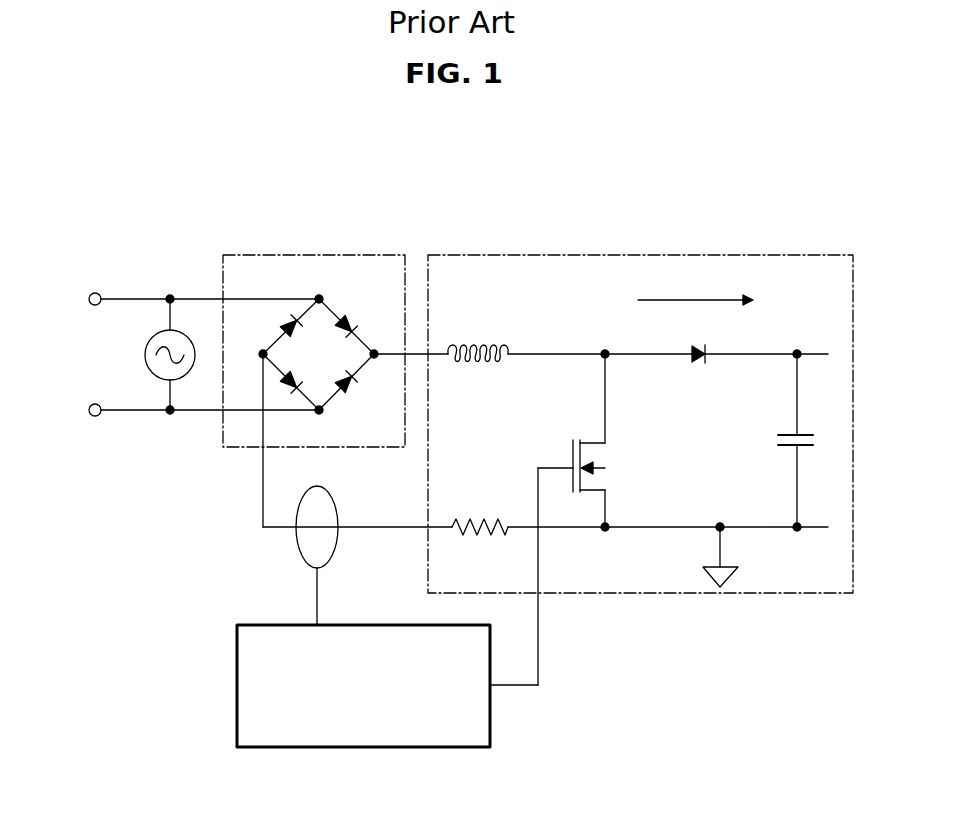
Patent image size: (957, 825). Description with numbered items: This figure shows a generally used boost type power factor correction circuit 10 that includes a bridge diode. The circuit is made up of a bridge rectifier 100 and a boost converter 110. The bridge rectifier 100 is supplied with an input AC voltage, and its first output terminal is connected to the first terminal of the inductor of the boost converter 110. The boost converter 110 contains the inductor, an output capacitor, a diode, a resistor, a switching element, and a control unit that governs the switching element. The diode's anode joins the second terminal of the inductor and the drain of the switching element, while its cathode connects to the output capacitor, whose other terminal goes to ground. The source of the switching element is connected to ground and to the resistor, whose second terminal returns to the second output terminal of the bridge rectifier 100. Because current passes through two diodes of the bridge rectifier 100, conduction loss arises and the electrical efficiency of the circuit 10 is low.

The boost type power factor correction circuit 10 is at (791, 176).
The bridge rectifier 100 is at (388, 255).
The boost converter 110 is at (507, 255).